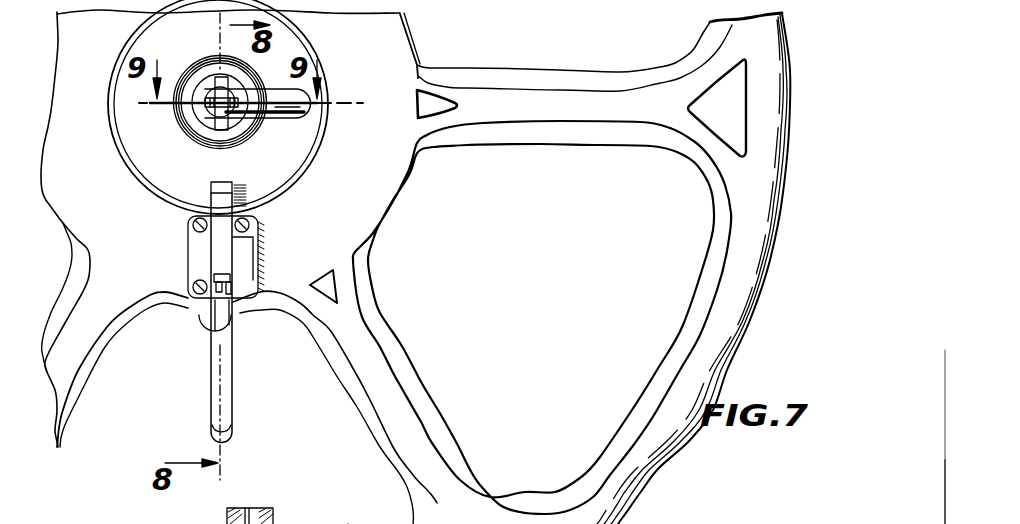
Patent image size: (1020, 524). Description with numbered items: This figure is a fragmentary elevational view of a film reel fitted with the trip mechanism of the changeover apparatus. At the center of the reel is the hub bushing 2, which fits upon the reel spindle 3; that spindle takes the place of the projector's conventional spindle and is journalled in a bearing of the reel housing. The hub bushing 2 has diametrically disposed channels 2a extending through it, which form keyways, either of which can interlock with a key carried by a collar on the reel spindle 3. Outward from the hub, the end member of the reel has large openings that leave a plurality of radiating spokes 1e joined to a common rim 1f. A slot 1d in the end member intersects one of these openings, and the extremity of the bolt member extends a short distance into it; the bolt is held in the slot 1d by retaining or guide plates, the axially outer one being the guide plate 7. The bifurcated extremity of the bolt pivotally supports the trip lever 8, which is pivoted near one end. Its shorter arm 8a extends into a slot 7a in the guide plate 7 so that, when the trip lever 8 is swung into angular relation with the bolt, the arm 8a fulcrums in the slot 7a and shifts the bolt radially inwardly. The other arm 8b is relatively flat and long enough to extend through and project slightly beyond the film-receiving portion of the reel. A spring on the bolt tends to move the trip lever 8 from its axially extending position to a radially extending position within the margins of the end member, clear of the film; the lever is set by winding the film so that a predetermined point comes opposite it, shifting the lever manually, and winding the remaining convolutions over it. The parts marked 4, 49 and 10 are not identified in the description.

The slot 1d is at (232, 302).
The radiating spokes 1e is at (383, 377).
The rim 1f is at (632, 461).
The hub bushing 2 is at (203, 90).
The channels 2a is at (227, 90).
The reel spindle 3 is at (213, 103).
The rod 4 is at (290, 108).
The guide plate 7 is at (249, 268).
The slot 7a is at (212, 312).
The trip lever 8 is at (230, 352).
The shorter arm 8a is at (122, 369).
The remaining arm 8b is at (233, 414).
The block 49 is at (299, 523).
The member 10 is at (355, 519).